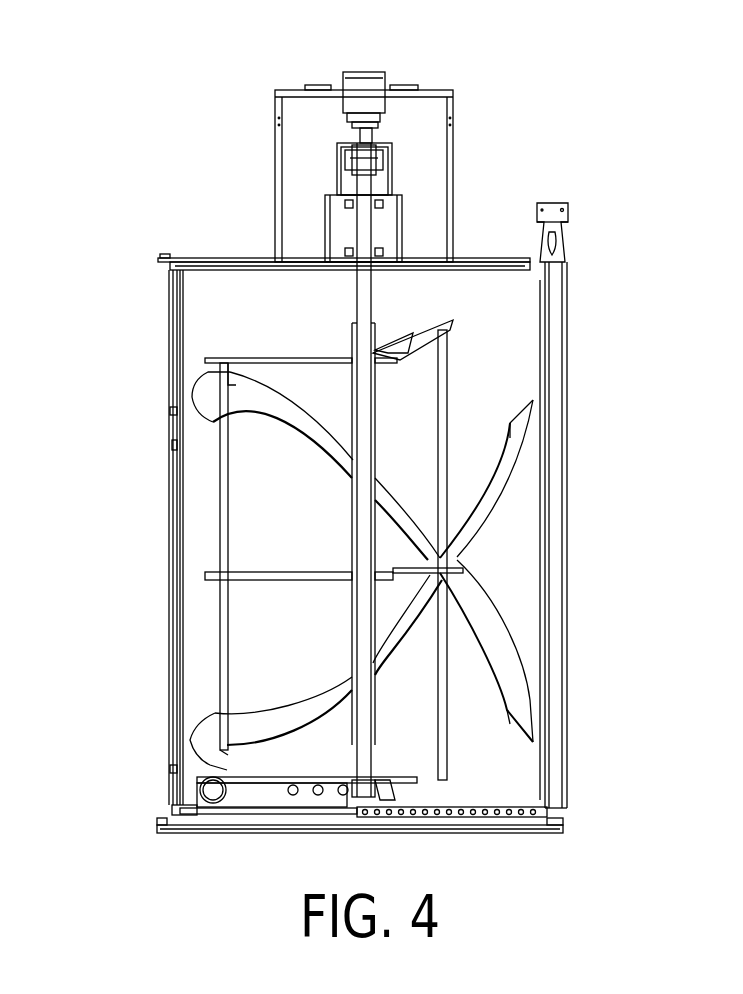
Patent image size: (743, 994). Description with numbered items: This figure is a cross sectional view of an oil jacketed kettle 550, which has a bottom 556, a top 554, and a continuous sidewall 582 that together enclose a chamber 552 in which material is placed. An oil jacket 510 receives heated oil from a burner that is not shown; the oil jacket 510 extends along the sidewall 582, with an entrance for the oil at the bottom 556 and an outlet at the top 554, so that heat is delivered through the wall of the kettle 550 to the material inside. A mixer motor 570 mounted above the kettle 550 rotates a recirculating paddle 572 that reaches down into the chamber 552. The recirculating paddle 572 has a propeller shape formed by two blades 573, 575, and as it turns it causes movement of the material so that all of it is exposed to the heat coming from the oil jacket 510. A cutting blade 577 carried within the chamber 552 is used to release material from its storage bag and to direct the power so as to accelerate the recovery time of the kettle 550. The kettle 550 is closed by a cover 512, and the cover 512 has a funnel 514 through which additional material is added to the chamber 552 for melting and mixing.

The oil jacket 510 is at (540, 830).
The cover 512 is at (477, 262).
The funnel 514 is at (453, 138).
The kettle 550 is at (207, 245).
The chamber 552 is at (507, 303).
The top 554 is at (195, 290).
The bottom 556 is at (187, 787).
The mixer motor 570 is at (388, 80).
The recirculating paddle 572 is at (447, 366).
The blade 573 is at (520, 460).
The blade 575 is at (515, 663).
The cutting blade 577 is at (450, 328).
The sidewall 582 is at (168, 517).